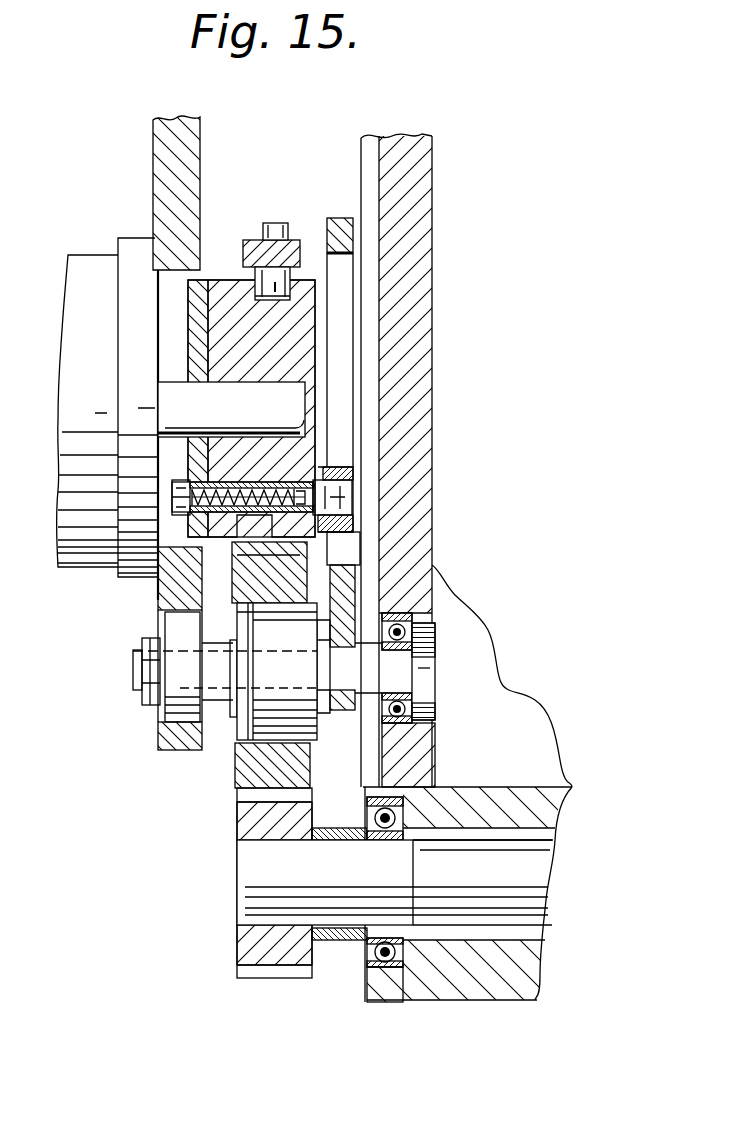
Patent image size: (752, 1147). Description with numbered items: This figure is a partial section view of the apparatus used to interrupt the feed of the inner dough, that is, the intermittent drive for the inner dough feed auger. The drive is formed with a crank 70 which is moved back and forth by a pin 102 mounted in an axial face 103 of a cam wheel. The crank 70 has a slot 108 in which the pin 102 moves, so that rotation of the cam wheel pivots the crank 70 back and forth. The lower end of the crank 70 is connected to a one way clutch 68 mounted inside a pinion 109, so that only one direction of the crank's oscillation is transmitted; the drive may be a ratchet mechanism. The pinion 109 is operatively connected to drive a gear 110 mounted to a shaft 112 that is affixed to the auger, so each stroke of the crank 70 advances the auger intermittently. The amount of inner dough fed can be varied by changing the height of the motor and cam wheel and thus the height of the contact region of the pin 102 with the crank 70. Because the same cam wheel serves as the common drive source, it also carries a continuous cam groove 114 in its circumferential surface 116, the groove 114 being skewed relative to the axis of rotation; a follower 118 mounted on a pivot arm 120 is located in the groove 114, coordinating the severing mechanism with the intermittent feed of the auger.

The one way clutch 68 is at (277, 718).
The crank 70 is at (338, 217).
The pin 102 is at (347, 484).
The axial face 103 is at (317, 447).
The slot 108 is at (341, 338).
The pinion 109 is at (260, 770).
The gear 110 is at (240, 945).
The shaft 112 is at (536, 872).
The cam groove 114 is at (220, 292).
The circumferential surface 116 is at (302, 252).
The follower 118 is at (226, 277).
The pivot arm 120 is at (302, 230).